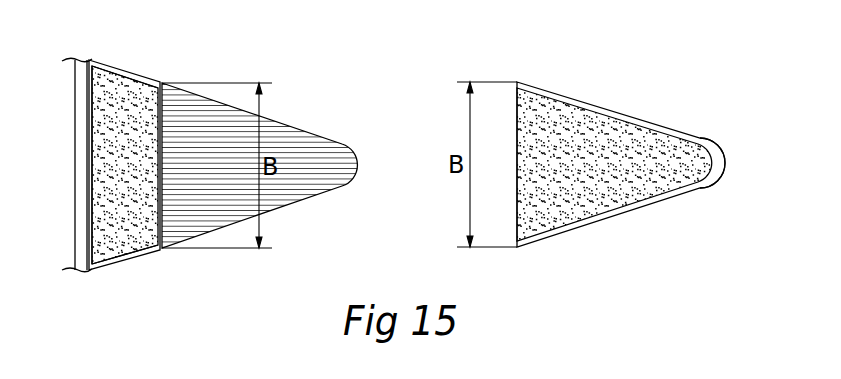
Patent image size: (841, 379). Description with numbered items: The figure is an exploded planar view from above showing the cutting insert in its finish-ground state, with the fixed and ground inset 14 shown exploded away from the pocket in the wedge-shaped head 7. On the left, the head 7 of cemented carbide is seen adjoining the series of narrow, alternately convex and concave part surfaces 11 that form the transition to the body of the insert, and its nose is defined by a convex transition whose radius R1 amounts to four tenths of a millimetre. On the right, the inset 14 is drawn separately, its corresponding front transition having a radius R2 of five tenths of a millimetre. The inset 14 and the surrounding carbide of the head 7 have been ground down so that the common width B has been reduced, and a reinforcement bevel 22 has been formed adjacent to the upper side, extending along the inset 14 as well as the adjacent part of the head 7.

The wedge-shaped head 7 is at (149, 270).
The part surfaces 11 is at (78, 94).
The inset 14 is at (620, 229).
The reinforcement bevel 22 is at (133, 79).
The radius of the convex transition R1 is at (354, 190).
The radius of the inset transition R2 is at (722, 147).